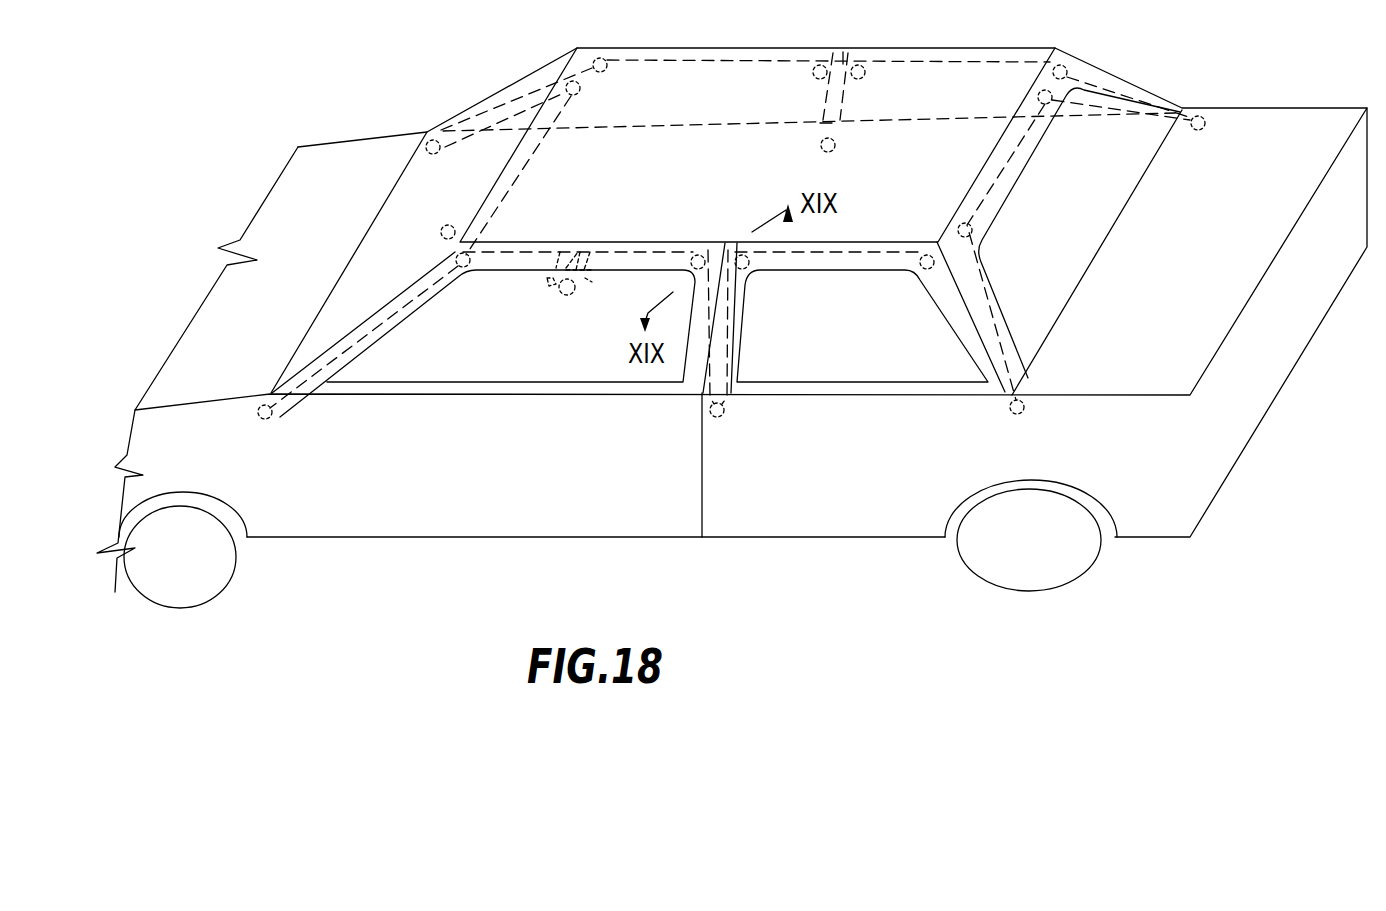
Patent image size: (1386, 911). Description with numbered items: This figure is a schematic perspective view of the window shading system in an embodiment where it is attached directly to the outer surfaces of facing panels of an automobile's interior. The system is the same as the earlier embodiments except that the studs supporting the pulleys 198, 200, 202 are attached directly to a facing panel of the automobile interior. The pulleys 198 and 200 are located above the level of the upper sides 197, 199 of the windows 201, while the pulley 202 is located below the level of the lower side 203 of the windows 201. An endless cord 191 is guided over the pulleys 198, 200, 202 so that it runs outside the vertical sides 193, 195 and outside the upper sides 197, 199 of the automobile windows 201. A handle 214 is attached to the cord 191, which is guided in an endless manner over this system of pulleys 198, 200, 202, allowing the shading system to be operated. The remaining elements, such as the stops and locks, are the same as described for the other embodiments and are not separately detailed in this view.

The endless cord 191 is at (578, 267).
The vertical side 193 is at (433, 293).
The vertical side 195 is at (690, 364).
The upper side 197 is at (562, 262).
The pulley 198 is at (688, 245).
The upper side 199 is at (866, 242).
The pulley 200 is at (735, 258).
The window 201 is at (558, 342).
The pulley 202 is at (722, 416).
The lower side 203 is at (623, 317).
The handle 214 is at (547, 282).